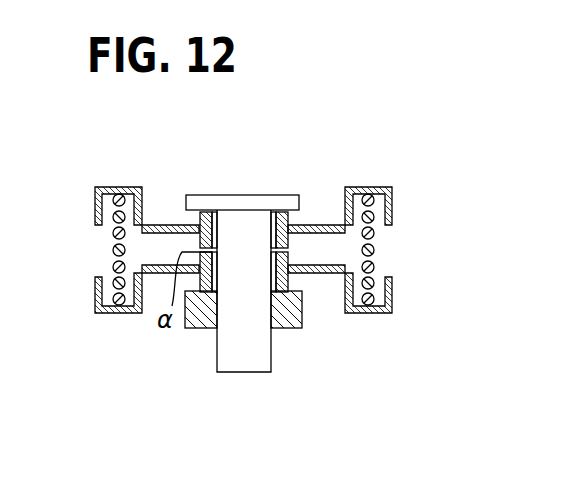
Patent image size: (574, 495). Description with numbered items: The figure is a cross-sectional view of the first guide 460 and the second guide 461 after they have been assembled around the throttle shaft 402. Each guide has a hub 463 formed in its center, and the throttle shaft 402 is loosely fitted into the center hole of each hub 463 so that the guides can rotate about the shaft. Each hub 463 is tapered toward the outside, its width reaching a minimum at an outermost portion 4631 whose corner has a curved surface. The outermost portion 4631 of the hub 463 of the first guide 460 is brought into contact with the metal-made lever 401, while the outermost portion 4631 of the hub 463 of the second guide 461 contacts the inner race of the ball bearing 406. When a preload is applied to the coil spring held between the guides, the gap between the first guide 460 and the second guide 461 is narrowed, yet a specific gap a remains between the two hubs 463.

The lever 401 is at (303, 198).
The throttle shaft 402 is at (271, 358).
The ball bearing 406 is at (302, 310).
The first guide 460 is at (367, 188).
The second guide 461 is at (117, 314).
The hub 463 is at (283, 196).
The outermost portion 4631 is at (210, 196).